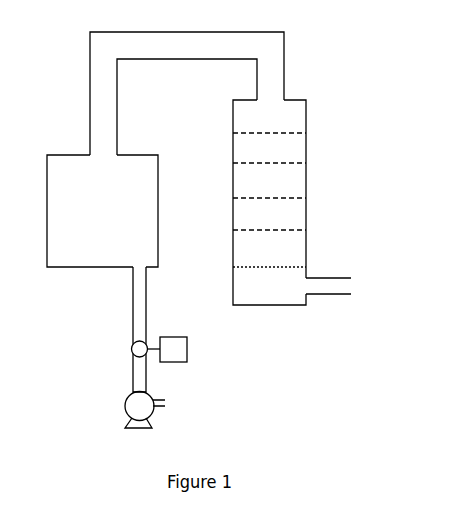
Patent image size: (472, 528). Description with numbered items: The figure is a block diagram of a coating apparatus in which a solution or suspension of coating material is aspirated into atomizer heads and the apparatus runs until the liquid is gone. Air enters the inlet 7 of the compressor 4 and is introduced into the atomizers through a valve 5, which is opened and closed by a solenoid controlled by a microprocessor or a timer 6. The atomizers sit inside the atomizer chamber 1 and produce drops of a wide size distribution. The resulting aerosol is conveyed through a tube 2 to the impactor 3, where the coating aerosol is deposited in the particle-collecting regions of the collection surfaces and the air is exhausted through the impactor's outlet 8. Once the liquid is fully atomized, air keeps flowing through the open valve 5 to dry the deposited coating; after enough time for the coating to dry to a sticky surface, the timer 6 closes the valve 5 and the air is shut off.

The atomizer chamber 1 is at (160, 218).
The tube 2 is at (165, 70).
The impactor 3 is at (308, 176).
The compressor 4 is at (122, 413).
The valve 5 is at (146, 345).
The timer 6 is at (187, 347).
The inlet 7 is at (166, 404).
The column outlet 8 is at (350, 288).